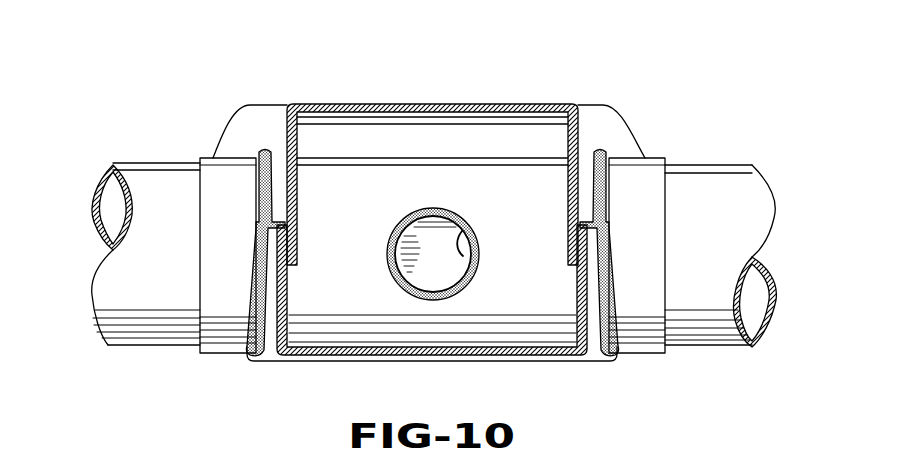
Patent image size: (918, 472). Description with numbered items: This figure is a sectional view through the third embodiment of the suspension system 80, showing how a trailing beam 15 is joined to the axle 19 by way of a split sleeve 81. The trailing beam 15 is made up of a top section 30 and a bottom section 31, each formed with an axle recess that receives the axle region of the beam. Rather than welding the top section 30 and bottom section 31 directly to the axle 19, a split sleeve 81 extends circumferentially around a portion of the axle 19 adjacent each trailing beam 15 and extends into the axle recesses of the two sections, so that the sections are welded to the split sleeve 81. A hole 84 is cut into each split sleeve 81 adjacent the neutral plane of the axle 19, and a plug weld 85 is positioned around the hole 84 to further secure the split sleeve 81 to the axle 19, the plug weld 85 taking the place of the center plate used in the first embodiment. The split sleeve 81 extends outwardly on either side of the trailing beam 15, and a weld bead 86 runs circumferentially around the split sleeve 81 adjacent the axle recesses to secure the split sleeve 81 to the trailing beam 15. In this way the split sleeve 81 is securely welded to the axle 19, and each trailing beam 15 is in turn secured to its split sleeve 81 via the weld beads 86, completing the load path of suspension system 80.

The trailing beam 15 is at (420, 107).
The axle 19 is at (693, 347).
The top section 30 is at (372, 106).
The bottom section 31 is at (537, 364).
The suspension system 80 is at (477, 220).
The split sleeve 81 is at (213, 157).
The hole 84 is at (472, 253).
The plug weld 85 is at (397, 238).
The weld bead 86 is at (257, 283).